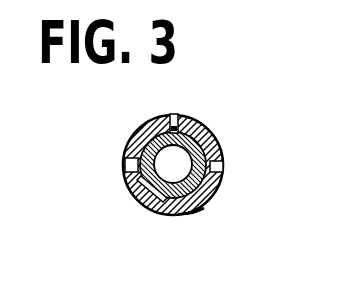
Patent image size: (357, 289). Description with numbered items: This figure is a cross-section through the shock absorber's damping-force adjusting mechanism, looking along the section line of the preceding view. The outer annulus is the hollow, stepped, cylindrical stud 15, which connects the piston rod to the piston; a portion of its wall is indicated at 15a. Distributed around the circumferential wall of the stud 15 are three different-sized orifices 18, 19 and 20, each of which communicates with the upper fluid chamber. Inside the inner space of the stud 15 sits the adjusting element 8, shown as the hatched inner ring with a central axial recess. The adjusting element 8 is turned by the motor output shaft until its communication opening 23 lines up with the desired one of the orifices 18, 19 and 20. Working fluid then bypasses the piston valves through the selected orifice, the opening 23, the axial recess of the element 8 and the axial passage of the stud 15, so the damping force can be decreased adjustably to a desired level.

The stud 15 is at (214, 141).
The lower portion of ring 15a is at (194, 212).
The adjusting element 8 is at (204, 125).
The orifice 19 is at (174, 113).
The orifice 18 is at (125, 163).
The orifice 20 is at (224, 167).
The communication opening 23 is at (131, 190).